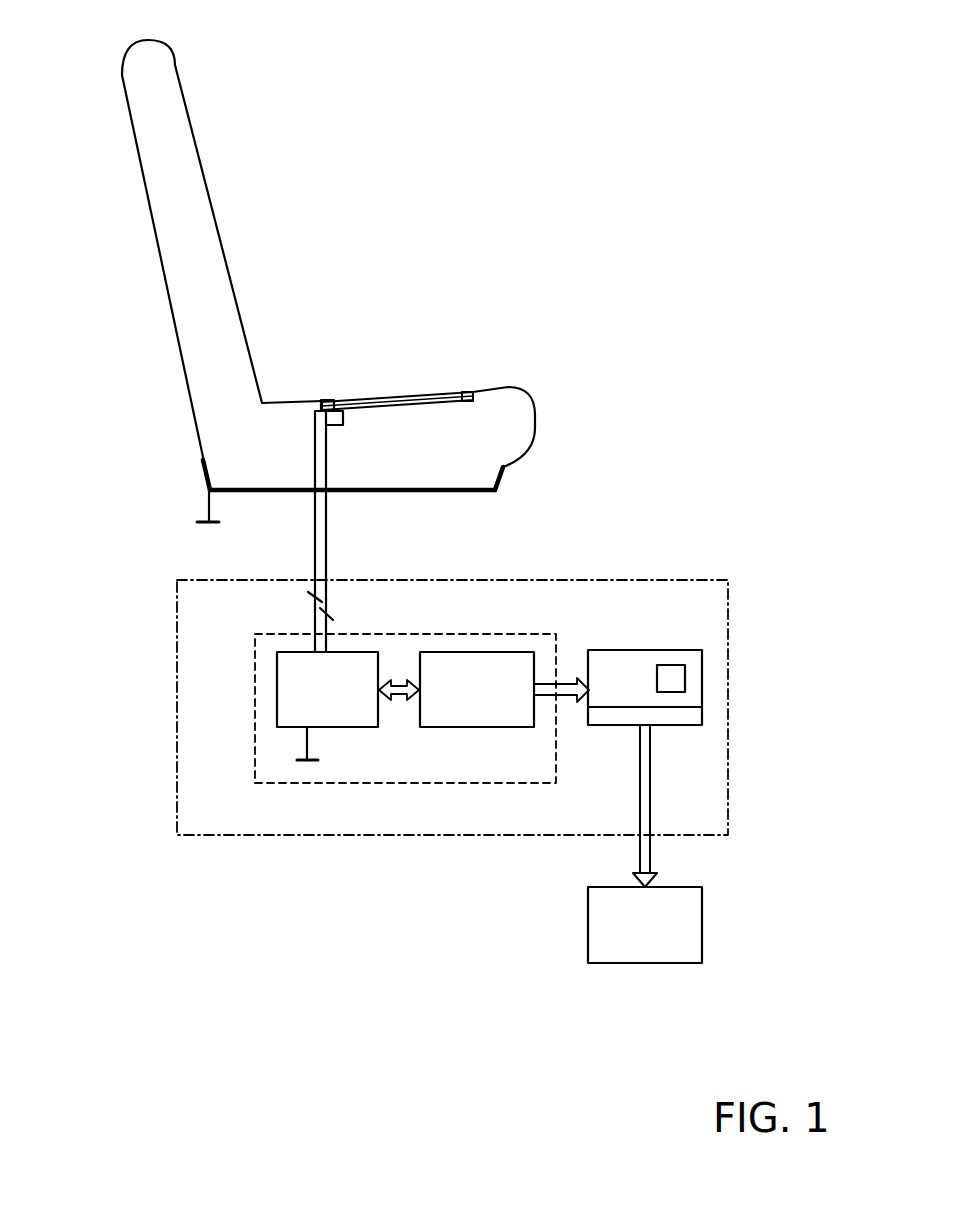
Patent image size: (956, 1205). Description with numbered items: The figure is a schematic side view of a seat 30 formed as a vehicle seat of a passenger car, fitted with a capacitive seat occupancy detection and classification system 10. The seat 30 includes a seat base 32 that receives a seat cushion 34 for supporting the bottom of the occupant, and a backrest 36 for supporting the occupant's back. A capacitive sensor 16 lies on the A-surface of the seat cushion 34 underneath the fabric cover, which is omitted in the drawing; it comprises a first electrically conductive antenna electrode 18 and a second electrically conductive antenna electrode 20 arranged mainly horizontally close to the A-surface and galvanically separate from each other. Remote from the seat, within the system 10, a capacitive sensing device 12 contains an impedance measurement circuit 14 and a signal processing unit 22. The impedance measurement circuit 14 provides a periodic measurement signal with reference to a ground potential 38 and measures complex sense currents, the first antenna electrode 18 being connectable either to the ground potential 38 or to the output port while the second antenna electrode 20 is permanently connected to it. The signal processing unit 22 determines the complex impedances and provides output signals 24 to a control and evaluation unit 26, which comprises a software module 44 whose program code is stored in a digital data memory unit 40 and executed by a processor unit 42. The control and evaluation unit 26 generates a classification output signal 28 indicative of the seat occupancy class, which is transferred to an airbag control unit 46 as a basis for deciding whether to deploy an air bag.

The seat occupancy detection and classification system 10 is at (678, 448).
The capacitive sensing device 12 is at (240, 660).
The impedance measurement circuit 14 is at (327, 689).
The capacitive sensor 16 is at (404, 358).
The first electrically conductive antenna electrode 18 is at (323, 402).
The second electrically conductive antenna electrode 20 is at (426, 400).
The signal processing unit 22 is at (477, 689).
The output signals 24 is at (563, 680).
The control and evaluation unit 26 is at (633, 648).
The classification output signal 28 is at (635, 852).
The seat 30 is at (335, 346).
The seat base 32 is at (433, 493).
The seat cushion 34 is at (521, 409).
The backrest 36 is at (147, 185).
The ground potential 38 is at (200, 525).
The digital data memory unit 40 is at (657, 715).
The processor unit 42 is at (677, 673).
The software module 44 is at (651, 762).
The airbag control unit 46 is at (645, 925).